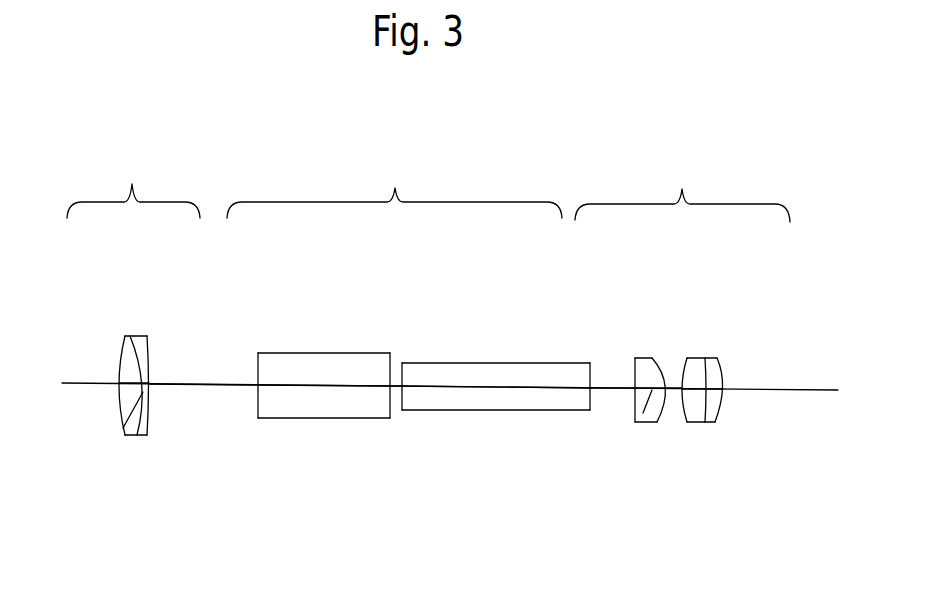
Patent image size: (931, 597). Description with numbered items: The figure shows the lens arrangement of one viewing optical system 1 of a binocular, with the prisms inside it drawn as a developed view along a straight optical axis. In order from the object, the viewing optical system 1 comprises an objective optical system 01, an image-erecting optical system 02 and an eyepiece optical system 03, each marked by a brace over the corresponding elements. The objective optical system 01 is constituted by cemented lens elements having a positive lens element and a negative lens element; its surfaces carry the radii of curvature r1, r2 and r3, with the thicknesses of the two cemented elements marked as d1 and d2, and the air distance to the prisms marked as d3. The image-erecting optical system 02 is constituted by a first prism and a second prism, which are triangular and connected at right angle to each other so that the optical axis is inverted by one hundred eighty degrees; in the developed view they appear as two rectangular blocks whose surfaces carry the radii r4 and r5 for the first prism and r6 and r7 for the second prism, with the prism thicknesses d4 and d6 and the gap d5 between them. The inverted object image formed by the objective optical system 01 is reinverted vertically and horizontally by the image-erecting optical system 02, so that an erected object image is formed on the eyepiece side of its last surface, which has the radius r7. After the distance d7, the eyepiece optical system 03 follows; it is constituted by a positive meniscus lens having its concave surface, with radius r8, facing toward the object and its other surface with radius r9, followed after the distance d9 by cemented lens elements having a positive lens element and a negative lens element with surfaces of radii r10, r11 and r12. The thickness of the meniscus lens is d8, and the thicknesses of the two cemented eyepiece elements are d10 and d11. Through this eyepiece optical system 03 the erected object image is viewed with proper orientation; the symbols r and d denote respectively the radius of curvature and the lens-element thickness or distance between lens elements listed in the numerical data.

The viewing optical system 1 is at (125, 130).
The objective optical system 01 is at (133, 183).
The image-erecting optical system 02 is at (394, 183).
The eyepiece optical system 03 is at (682, 189).
The radius of curvature of surface No. 1 r1 is at (127, 337).
The radius of curvature of surface No. 2 r2 is at (130, 337).
The radius of curvature of surface No. 3 r3 is at (147, 337).
The radius of curvature of surface No. 4 r4 is at (258, 353).
The radius of curvature of surface No. 5 r5 is at (390, 353).
The radius of curvature of surface No. 6 r6 is at (402, 363).
The radius of curvature of surface No. 7 r7 is at (588, 365).
The radius of curvature of surface No. 8 r8 is at (635, 359).
The radius of curvature of surface No. 9 r9 is at (657, 359).
The radius of curvature of surface No. 10 r10 is at (687, 358).
The radius of curvature of surface No. 11 r11 is at (705, 358).
The radius of curvature of surface No. 12 r12 is at (717, 358).
The lens-element thickness d1 is at (123, 430).
The lens-element thickness d2 is at (145, 435).
The distance d3 is at (202, 386).
The thickness d4 is at (330, 387).
The distance d5 is at (390, 387).
The thickness d6 is at (490, 390).
The distance d7 is at (613, 390).
The lens-element thickness d8 is at (652, 390).
The distance d9 is at (675, 390).
The lens-element thickness d10 is at (698, 395).
The lens-element thickness d11 is at (720, 407).